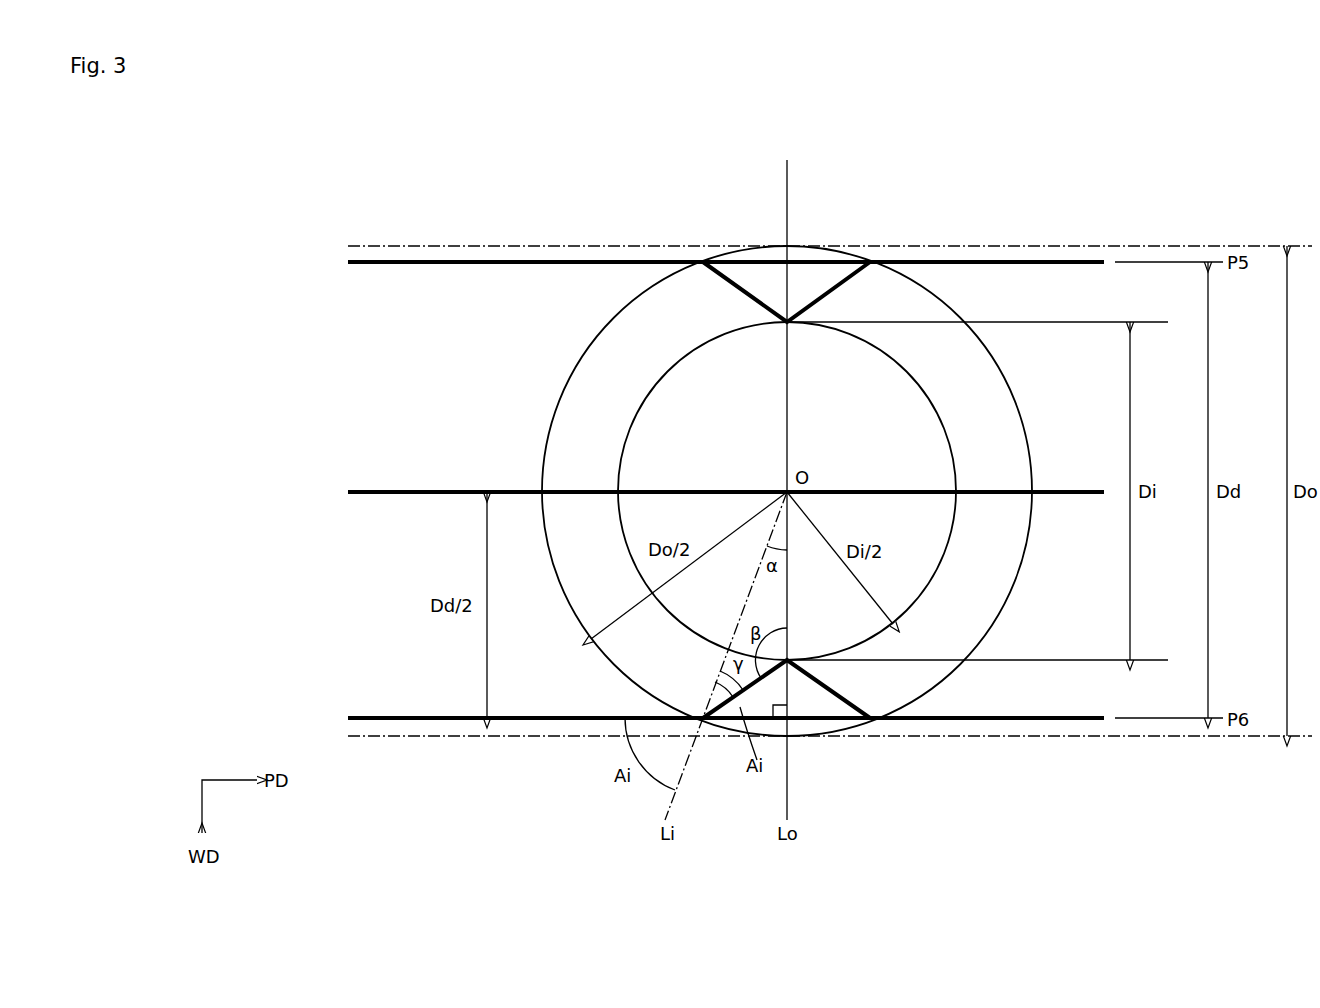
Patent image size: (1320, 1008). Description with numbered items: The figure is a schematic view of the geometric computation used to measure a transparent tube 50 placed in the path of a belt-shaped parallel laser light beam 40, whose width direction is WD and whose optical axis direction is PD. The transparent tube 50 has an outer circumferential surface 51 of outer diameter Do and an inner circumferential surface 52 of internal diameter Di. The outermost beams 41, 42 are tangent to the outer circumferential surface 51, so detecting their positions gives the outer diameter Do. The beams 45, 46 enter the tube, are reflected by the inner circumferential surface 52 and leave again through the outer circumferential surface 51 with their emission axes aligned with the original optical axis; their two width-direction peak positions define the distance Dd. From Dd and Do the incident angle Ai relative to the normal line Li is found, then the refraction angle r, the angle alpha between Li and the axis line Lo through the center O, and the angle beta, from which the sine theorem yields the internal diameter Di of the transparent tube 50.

The parallel laser light beam 40 is at (829, 231).
The beam 41 is at (540, 246).
The beam 42 is at (518, 737).
The beam 45 is at (462, 262).
The beam 46 is at (437, 722).
The transparent tube 50 is at (660, 270).
The outer circumferential surface 51 is at (588, 343).
The inner circumferential surface 52 is at (668, 370).